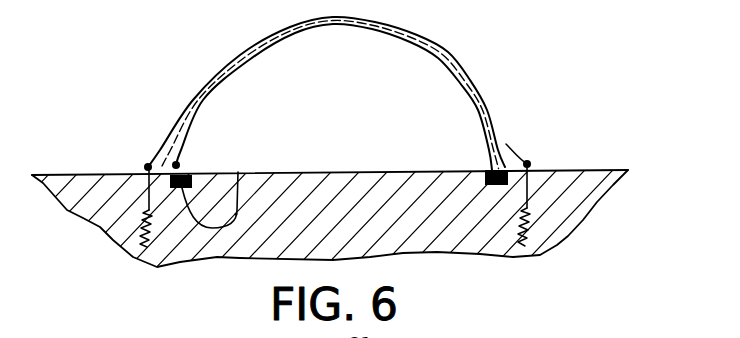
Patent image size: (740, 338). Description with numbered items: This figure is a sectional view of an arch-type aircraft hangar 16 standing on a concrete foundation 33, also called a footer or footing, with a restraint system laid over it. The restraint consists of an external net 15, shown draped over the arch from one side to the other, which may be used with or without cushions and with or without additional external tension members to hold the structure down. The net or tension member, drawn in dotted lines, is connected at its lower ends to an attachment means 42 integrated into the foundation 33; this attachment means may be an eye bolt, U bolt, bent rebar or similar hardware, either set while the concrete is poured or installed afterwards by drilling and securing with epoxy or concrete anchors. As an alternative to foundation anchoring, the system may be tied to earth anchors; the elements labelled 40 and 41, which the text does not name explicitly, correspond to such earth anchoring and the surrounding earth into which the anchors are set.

The external net 15 is at (326, 93).
The arch-shaped hangar 16 is at (488, 139).
The foundation 33 is at (219, 186).
The tissue anchor 40 is at (531, 163).
The tissue 41 is at (530, 233).
The attachment means 42 is at (505, 168).